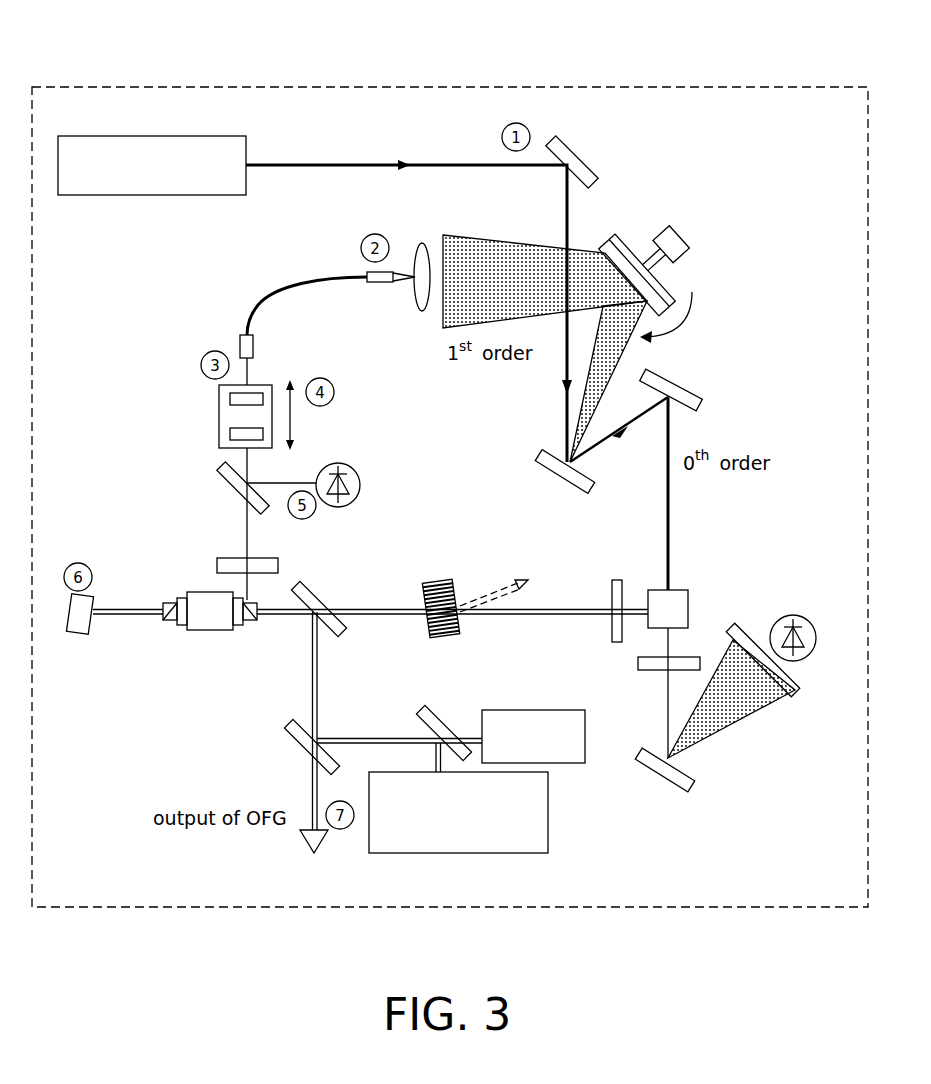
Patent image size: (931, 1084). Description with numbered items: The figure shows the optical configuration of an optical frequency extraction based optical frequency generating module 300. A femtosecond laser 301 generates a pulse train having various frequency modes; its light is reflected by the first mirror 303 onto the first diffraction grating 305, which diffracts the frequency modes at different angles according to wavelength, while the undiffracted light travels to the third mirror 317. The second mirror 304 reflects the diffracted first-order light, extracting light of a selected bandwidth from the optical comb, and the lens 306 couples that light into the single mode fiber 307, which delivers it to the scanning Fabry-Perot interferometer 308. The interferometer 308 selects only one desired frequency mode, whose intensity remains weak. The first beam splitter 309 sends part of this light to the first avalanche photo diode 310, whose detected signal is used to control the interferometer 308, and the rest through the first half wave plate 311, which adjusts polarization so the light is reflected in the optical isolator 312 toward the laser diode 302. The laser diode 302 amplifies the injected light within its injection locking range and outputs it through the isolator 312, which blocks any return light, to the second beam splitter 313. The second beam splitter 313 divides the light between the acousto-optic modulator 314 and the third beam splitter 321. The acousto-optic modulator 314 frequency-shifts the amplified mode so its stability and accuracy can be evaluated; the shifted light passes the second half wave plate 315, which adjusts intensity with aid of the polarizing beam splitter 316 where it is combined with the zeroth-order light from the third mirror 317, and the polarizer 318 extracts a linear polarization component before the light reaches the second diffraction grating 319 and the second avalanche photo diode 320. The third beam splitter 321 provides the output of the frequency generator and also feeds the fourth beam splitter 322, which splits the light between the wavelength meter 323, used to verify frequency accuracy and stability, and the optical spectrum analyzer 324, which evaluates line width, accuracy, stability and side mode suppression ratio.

The optical frequency generating module 300 is at (78, 87).
The femtosecond laser 301 is at (111, 196).
The laser diode 302 is at (90, 623).
The first mirror 303 is at (588, 172).
The second mirror 304 is at (632, 243).
The first diffraction grating 305 is at (540, 458).
The lens 306 is at (422, 258).
The single mode fiber 307 is at (297, 292).
The scanning Fabry-Perot interferometer 308 is at (218, 392).
The first beam splitter 309 is at (220, 475).
The first avalanche photo diode 310 is at (358, 472).
The first half wave plate 311 is at (278, 565).
The optical isolator 312 is at (248, 627).
The second beam splitter 313 is at (342, 633).
The acousto-optic modulator 314 is at (457, 592).
The second half wave plate 315 is at (610, 628).
The polarizing beam splitter 316 is at (690, 607).
The third mirror 317 is at (702, 403).
The polarizer 318 is at (637, 669).
The second diffraction grating 319 is at (661, 765).
The second avalanche photo diode 320 is at (795, 615).
The third beam splitter 321 is at (286, 733).
The fourth beam splitter 322 is at (423, 712).
The wavelength meter 323 is at (548, 842).
The optical spectrum analyzer 324 is at (522, 710).